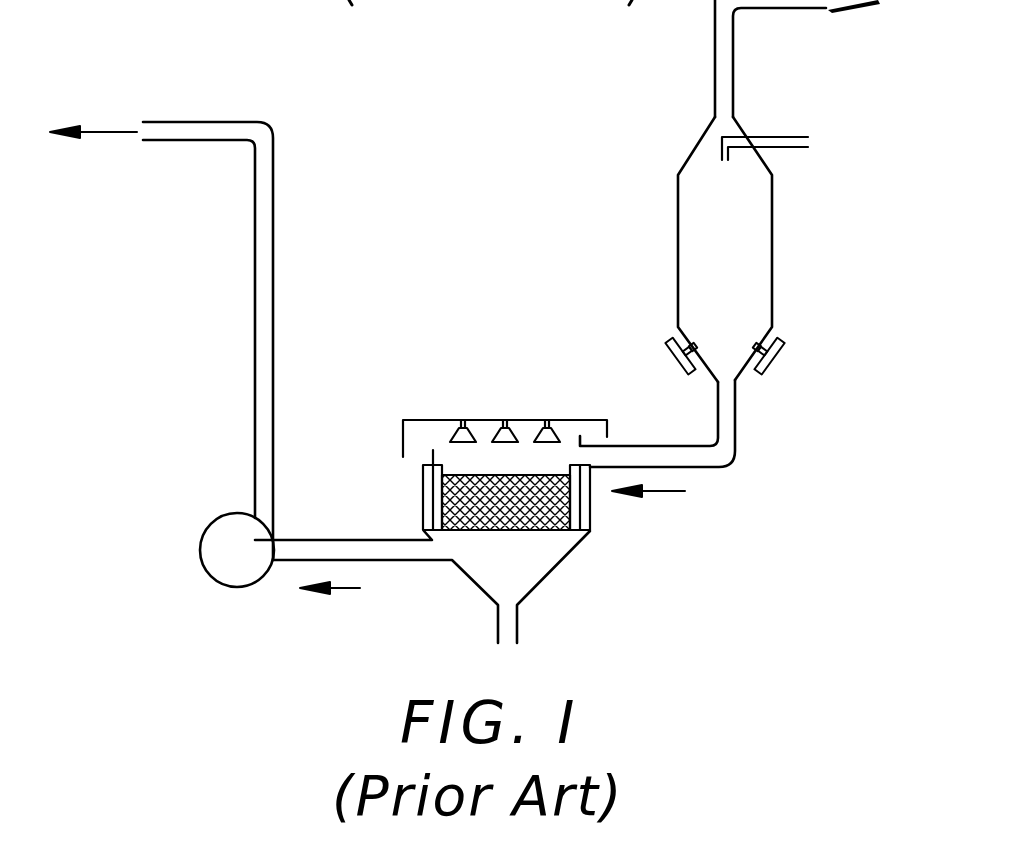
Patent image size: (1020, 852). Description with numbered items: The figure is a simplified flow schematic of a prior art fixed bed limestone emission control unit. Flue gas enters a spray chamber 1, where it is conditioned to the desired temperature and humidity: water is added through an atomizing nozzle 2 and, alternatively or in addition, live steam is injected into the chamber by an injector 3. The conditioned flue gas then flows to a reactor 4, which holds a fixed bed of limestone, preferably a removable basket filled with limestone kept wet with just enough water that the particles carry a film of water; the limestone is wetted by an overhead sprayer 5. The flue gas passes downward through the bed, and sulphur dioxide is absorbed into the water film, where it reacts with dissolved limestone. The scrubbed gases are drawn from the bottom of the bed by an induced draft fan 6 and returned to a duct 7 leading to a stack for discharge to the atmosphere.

The spray chamber 1 is at (742, 263).
The atomizing nozzle 2 is at (772, 137).
The injector 3 is at (777, 357).
The reactor 4 is at (515, 530).
The overhead sprayer 5 is at (463, 417).
The induced draft fan 6 is at (228, 588).
The duct 7 is at (273, 332).